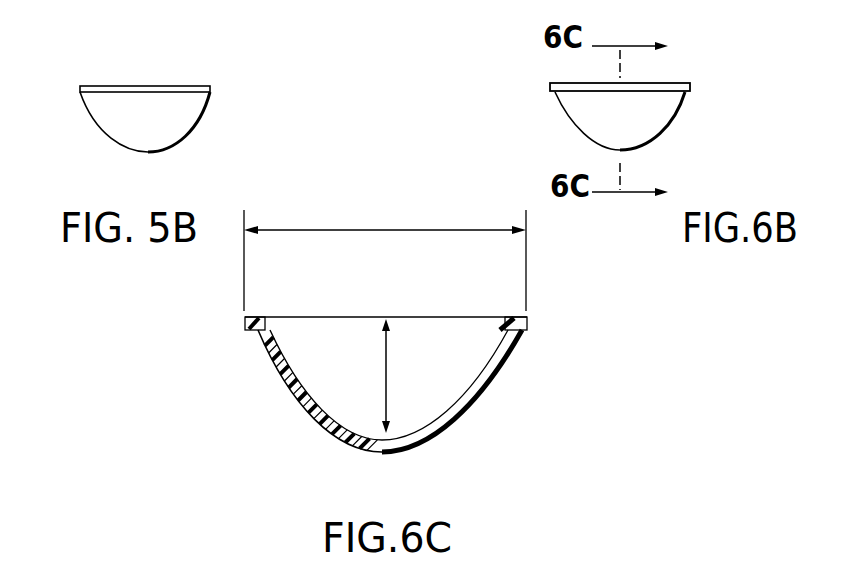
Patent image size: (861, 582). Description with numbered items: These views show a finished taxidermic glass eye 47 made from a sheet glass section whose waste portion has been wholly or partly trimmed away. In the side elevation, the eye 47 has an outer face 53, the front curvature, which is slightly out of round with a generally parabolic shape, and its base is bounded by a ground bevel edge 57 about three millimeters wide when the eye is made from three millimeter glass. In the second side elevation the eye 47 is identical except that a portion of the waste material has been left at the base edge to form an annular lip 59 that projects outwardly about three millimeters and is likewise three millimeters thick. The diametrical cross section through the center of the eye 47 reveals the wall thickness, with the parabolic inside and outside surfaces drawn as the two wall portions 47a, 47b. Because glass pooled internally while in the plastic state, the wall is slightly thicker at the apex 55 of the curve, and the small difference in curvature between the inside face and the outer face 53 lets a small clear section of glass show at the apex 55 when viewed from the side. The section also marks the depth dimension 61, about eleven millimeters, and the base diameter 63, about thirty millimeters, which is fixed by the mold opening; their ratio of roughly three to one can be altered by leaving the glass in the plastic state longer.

In FIG. 5B, the eye 47 is at (181, 70).
In FIG. 6B, the eye 47 is at (682, 124).
In FIG. 6C, the eye 47 is at (444, 309).
In FIG. 6C, the left wall section of reflector 47a is at (318, 381).
In FIG. 6C, the right wall section of reflector 47b is at (477, 388).
In FIG. 5B, the outer face 53 is at (100, 117).
In FIG. 6C, the apex 55 is at (383, 449).
In FIG. 5B, the ground bevel edge 57 is at (210, 89).
In FIG. 6B, the annular lip 59 is at (550, 87).
In FIG. 6C, the annular lip 59 is at (530, 322).
In FIG. 6C, the depth dimension 61 is at (388, 384).
In FIG. 6C, the base diameter 63 is at (340, 229).